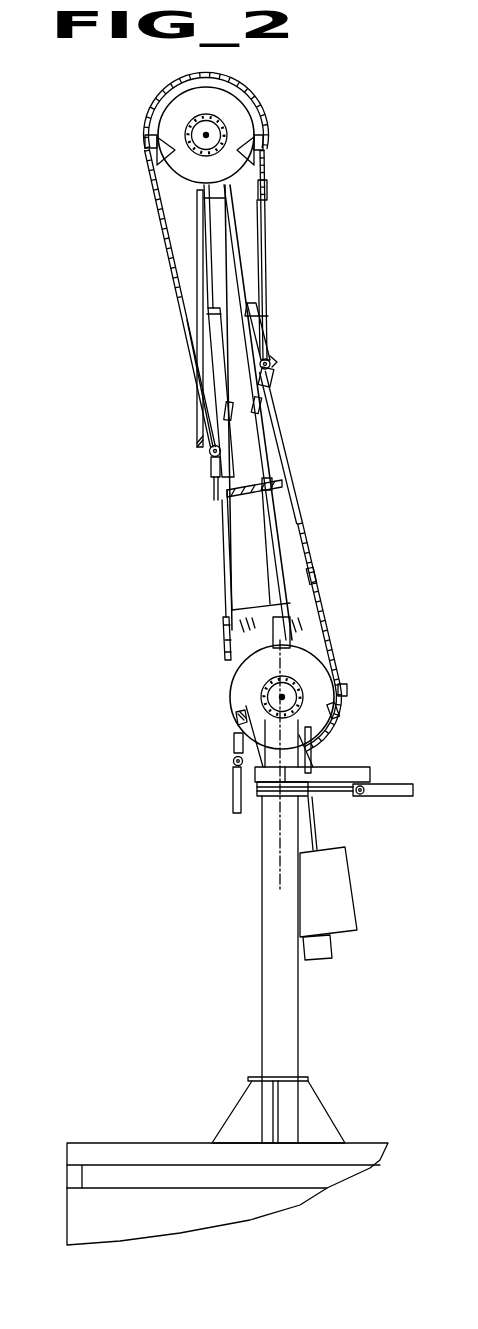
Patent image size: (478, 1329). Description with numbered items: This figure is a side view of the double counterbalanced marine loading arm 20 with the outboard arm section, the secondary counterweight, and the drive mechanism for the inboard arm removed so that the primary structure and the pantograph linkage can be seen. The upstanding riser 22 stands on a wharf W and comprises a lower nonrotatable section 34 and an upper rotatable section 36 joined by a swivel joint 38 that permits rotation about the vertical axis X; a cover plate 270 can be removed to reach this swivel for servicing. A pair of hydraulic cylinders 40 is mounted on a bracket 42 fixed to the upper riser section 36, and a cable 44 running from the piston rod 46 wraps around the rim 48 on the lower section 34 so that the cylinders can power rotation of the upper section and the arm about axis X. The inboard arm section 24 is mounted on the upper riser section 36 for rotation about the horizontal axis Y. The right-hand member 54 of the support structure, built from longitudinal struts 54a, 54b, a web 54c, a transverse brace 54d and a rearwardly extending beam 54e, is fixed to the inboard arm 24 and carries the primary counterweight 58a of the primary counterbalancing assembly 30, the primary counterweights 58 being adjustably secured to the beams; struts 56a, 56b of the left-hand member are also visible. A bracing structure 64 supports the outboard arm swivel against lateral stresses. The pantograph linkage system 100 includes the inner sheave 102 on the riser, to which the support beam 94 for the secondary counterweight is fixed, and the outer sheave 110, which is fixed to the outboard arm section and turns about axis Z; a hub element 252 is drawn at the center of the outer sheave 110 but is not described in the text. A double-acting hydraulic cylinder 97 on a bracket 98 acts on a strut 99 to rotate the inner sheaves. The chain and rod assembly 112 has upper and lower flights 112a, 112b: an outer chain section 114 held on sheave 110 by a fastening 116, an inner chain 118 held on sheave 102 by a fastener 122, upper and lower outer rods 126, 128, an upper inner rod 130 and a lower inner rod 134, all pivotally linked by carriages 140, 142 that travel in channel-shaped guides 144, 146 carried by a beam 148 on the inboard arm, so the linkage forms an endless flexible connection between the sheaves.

The double counterbalanced marine loading arm 20 is at (332, 178).
The upstanding riser 22 is at (260, 993).
The inboard arm section 24 is at (247, 222).
The primary counterbalancing assembly 30 is at (363, 934).
The lower nonrotatable section 34 is at (298, 1027).
The upper rotatable section 36 is at (268, 722).
The swivel joint 38 is at (257, 777).
The hydraulic cylinders 40 is at (393, 785).
The bracket 42 is at (350, 767).
The cable 44 is at (314, 797).
The piston rod 46 is at (351, 796).
The rim 48 is at (237, 813).
The right-hand member 54 is at (299, 514).
The longitudinal strut 54a is at (309, 553).
The longitudinal strut 54b is at (229, 565).
The web 54c is at (250, 633).
The transverse brace 54d is at (268, 483).
The rearwardly extending beam 54e is at (318, 848).
The longitudinal strut 56a is at (262, 404).
The longitudinal strut 56b is at (226, 414).
The primary counterweights 58 is at (357, 900).
The primary counterweight 58a is at (345, 912).
The bracing structure 64 is at (200, 428).
The support beam 94 is at (226, 656).
The double-acting hydraulic cylinder 97 is at (234, 762).
The bracket 98 is at (235, 745).
The strut 99 is at (237, 720).
The pantograph linkage system 100 is at (274, 368).
The inner sheave 102 is at (313, 678).
The outer sheave 110 is at (178, 102).
The chain and rod assembly 112 is at (268, 167).
The upper flight 112a is at (268, 262).
The lower flight 112b is at (209, 392).
The outer chain section 114 is at (152, 105).
The fastening 116 is at (144, 141).
The inner chain 118 is at (330, 642).
The fastener 122 is at (347, 690).
The upper outer rod 126 is at (266, 288).
The lower outer rod 128 is at (190, 320).
The upper inner rod 130 is at (296, 496).
The lower inner rod 134 is at (222, 620).
The carriage 140 is at (275, 362).
The carriage 142 is at (209, 457).
The guide 144 is at (258, 318).
The guide 146 is at (222, 367).
The beam 148 is at (232, 343).
The hub 252 is at (214, 120).
The cover plate 270 is at (337, 711).
The vertical axis X is at (279, 867).
The horizontal axis Y is at (281, 696).
The horizontal axis Z is at (208, 132).
The wharf W is at (124, 1143).